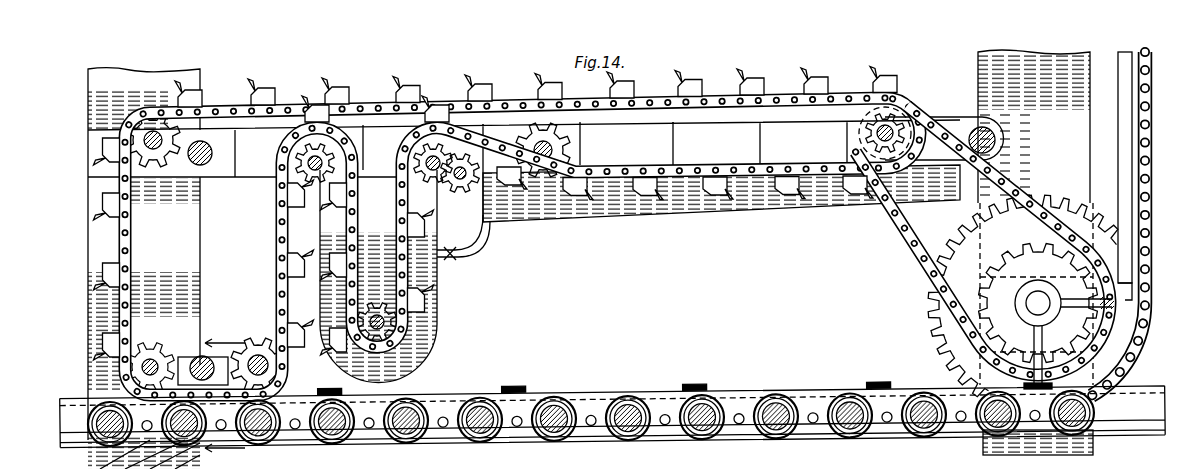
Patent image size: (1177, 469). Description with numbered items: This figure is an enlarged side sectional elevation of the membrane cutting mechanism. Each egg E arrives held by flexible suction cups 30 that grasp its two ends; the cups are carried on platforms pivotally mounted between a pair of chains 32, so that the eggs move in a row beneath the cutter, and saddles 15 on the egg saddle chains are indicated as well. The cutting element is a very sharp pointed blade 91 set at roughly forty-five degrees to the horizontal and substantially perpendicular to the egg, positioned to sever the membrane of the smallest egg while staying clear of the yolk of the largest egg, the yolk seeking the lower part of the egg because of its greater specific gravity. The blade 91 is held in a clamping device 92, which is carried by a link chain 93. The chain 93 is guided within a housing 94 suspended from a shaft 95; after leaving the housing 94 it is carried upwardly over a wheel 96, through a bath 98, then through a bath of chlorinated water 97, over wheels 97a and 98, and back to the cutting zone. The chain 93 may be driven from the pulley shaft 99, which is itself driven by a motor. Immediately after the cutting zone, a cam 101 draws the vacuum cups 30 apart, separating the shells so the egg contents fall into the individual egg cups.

The pointed blade 91 is at (810, 92).
The clamping device 92 is at (455, 96).
The link chain 93 is at (718, 108).
The housing 94 is at (254, 350).
The shaft 95 is at (196, 358).
The wheel 96 is at (280, 200).
The bath of chlorinated water 97 is at (622, 208).
The wheel 97a is at (858, 130).
The bath 98 is at (165, 168).
The pulley shaft 99 is at (1040, 300).
The cam 101 is at (586, 396).
The chains 32 is at (808, 404).
The flexible suction cup 30 is at (418, 442).
The egg E is at (418, 404).
The saddles 15 is at (225, 395).